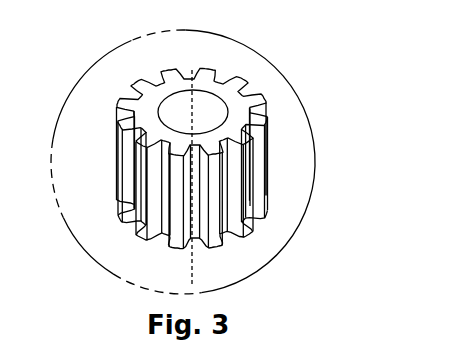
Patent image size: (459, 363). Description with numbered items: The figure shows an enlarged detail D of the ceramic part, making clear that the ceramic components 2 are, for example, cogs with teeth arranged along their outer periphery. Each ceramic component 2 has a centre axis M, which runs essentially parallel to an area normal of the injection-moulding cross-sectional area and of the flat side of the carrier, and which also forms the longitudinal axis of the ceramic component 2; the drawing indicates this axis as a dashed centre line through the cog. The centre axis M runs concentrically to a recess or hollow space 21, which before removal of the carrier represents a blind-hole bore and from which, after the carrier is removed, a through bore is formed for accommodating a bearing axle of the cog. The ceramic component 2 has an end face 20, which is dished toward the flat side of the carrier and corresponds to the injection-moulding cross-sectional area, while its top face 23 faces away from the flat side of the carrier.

The ceramic component 2 is at (194, 155).
The end face 20 is at (113, 171).
The hollow space 21 is at (179, 117).
The top face 23 is at (233, 110).
The detail D is at (247, 282).
The centre axis M is at (193, 260).